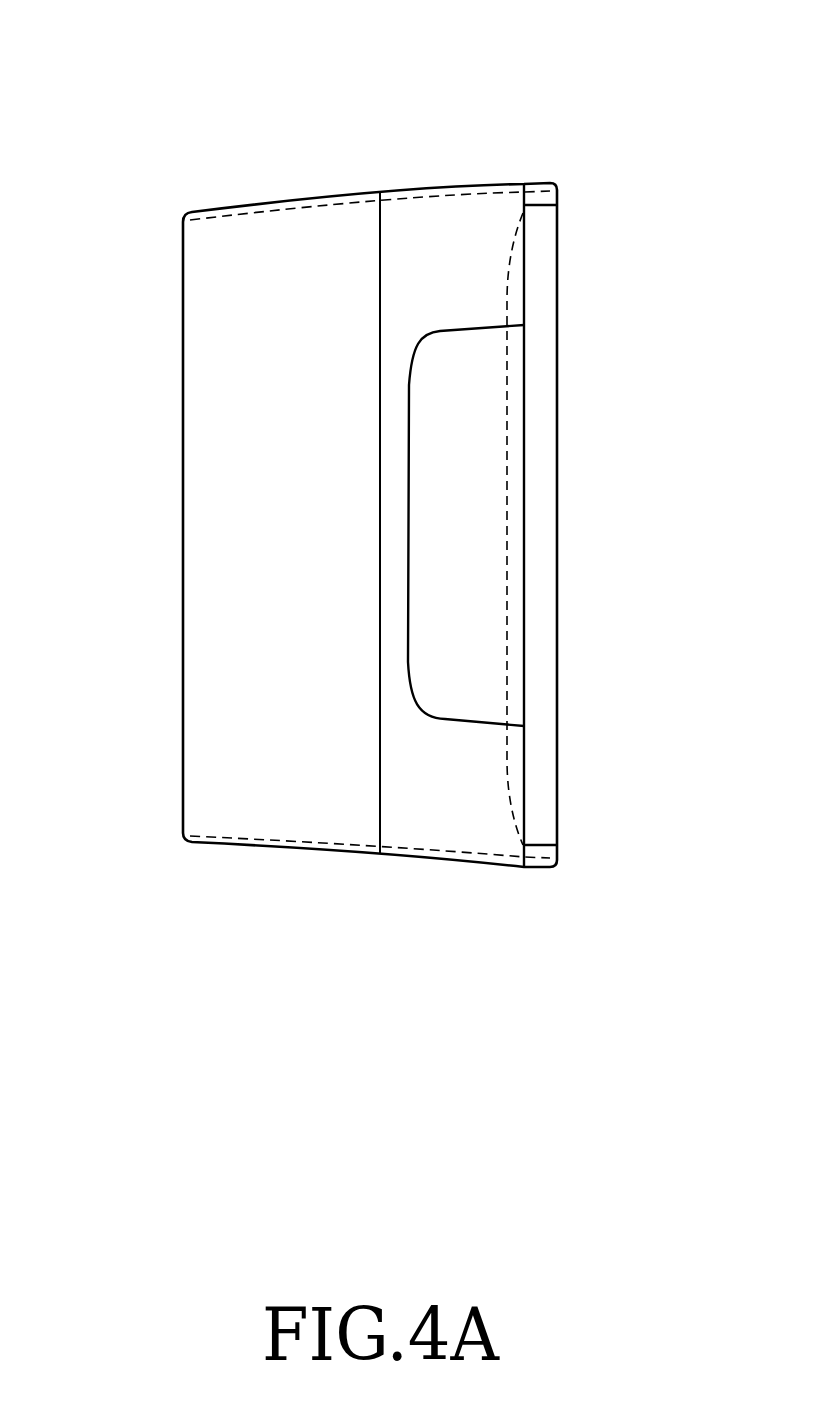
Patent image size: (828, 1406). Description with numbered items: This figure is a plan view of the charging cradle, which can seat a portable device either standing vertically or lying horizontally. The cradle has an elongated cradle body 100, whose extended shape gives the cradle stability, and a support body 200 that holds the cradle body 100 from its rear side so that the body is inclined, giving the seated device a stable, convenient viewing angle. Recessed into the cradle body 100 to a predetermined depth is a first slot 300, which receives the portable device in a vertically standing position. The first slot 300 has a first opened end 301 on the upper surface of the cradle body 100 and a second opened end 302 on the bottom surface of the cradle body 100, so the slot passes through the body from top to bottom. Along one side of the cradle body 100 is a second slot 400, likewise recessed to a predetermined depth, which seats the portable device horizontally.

The cradle body 100 is at (379, 489).
The support body 200 is at (166, 585).
The first slot 300 is at (481, 479).
The first opened end 301 is at (445, 658).
The second opened end 302 is at (604, 529).
The second slot 400 is at (534, 292).